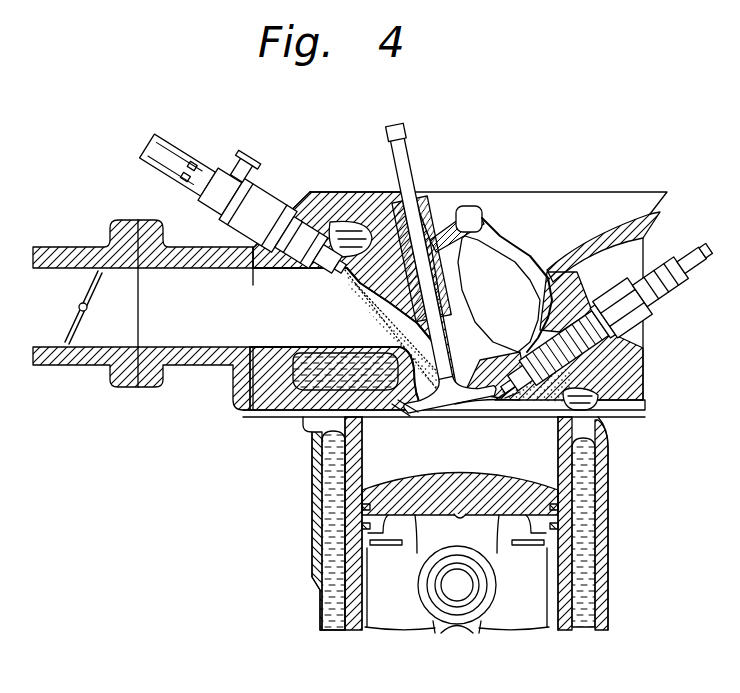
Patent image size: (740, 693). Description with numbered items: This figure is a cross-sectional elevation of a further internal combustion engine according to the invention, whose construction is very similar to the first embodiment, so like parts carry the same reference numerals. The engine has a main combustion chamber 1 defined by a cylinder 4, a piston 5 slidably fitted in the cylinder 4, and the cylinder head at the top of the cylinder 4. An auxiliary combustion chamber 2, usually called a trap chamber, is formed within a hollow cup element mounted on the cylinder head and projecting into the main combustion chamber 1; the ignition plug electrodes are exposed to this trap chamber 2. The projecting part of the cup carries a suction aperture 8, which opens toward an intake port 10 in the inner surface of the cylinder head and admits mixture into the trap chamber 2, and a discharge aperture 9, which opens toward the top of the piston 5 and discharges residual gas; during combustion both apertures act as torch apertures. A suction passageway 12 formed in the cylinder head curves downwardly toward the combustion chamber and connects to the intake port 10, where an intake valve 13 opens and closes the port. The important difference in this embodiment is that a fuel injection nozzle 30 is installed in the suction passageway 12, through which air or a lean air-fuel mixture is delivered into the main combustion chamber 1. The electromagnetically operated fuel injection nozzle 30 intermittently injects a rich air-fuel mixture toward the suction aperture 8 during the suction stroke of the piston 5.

The main combustion chamber 1 is at (449, 459).
The auxiliary combustion chamber 2 is at (548, 407).
The cylinder 4 is at (603, 457).
The piston 5 is at (358, 472).
The suction aperture 8 is at (497, 404).
The discharge aperture 9 is at (520, 402).
The intake port 10 is at (406, 417).
The suction passageway 12 is at (328, 324).
The intake valve 13 is at (464, 408).
The fuel injection nozzle 30 is at (272, 194).